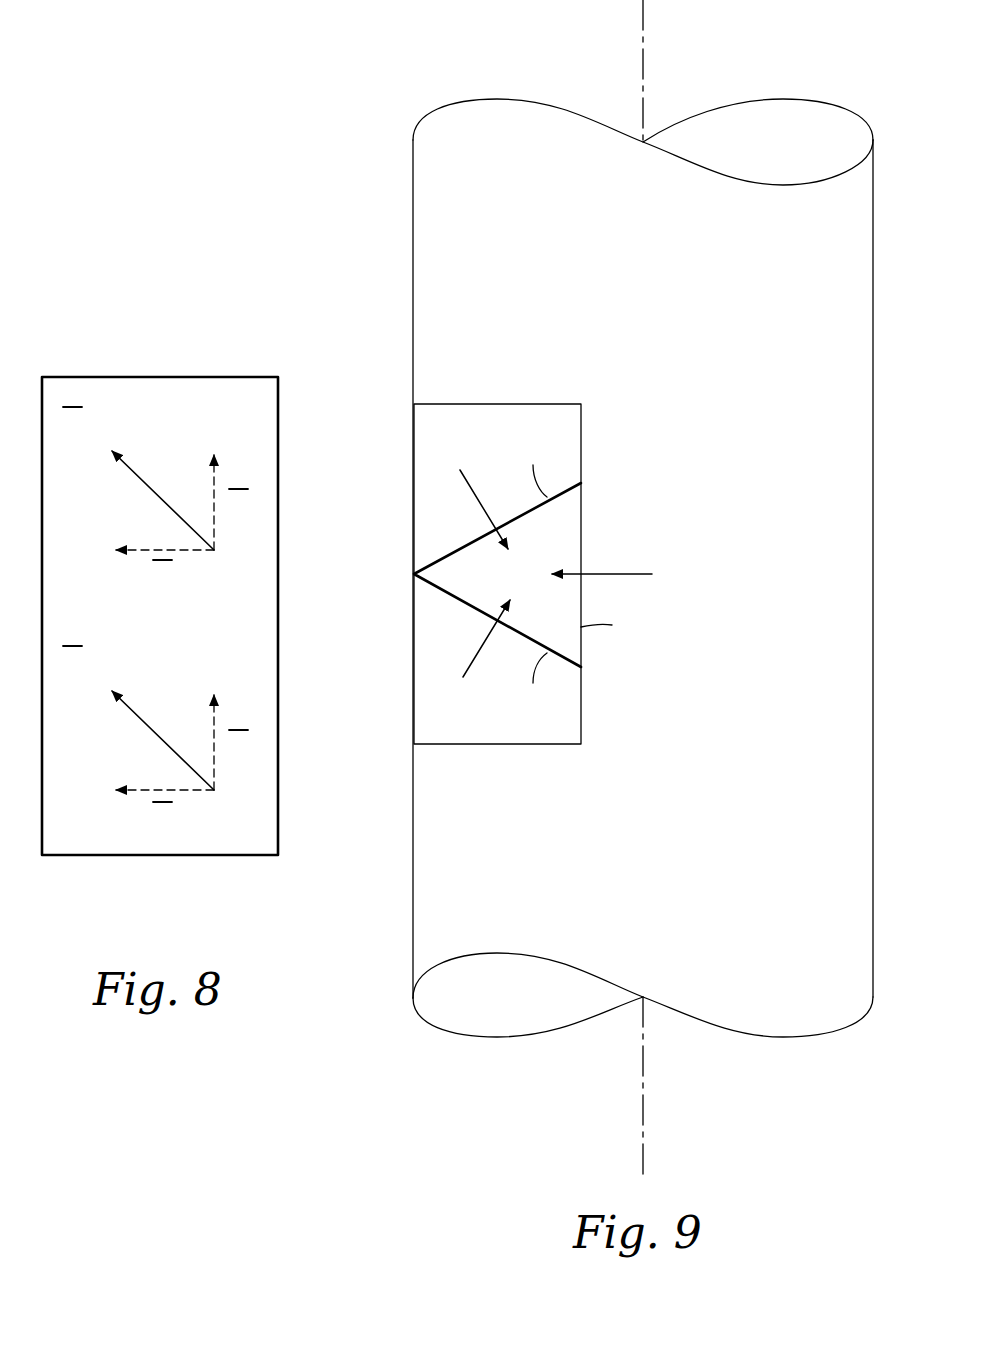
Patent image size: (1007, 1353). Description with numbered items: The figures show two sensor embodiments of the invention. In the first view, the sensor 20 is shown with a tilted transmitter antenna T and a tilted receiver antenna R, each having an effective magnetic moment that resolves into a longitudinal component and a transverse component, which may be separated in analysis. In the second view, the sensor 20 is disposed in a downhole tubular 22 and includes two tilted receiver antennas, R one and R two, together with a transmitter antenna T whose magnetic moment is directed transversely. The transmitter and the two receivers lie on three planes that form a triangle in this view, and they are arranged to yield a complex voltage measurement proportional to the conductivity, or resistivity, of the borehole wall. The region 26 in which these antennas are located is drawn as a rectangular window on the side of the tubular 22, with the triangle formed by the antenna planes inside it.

In FIG. 8, the sensor 20 is at (153, 340).
In FIG. 9, the sensor 20 is at (612, 587).
In FIG. 9, the tubular 22 is at (413, 222).
In FIG. 9, the sensor region / window 26 is at (553, 744).